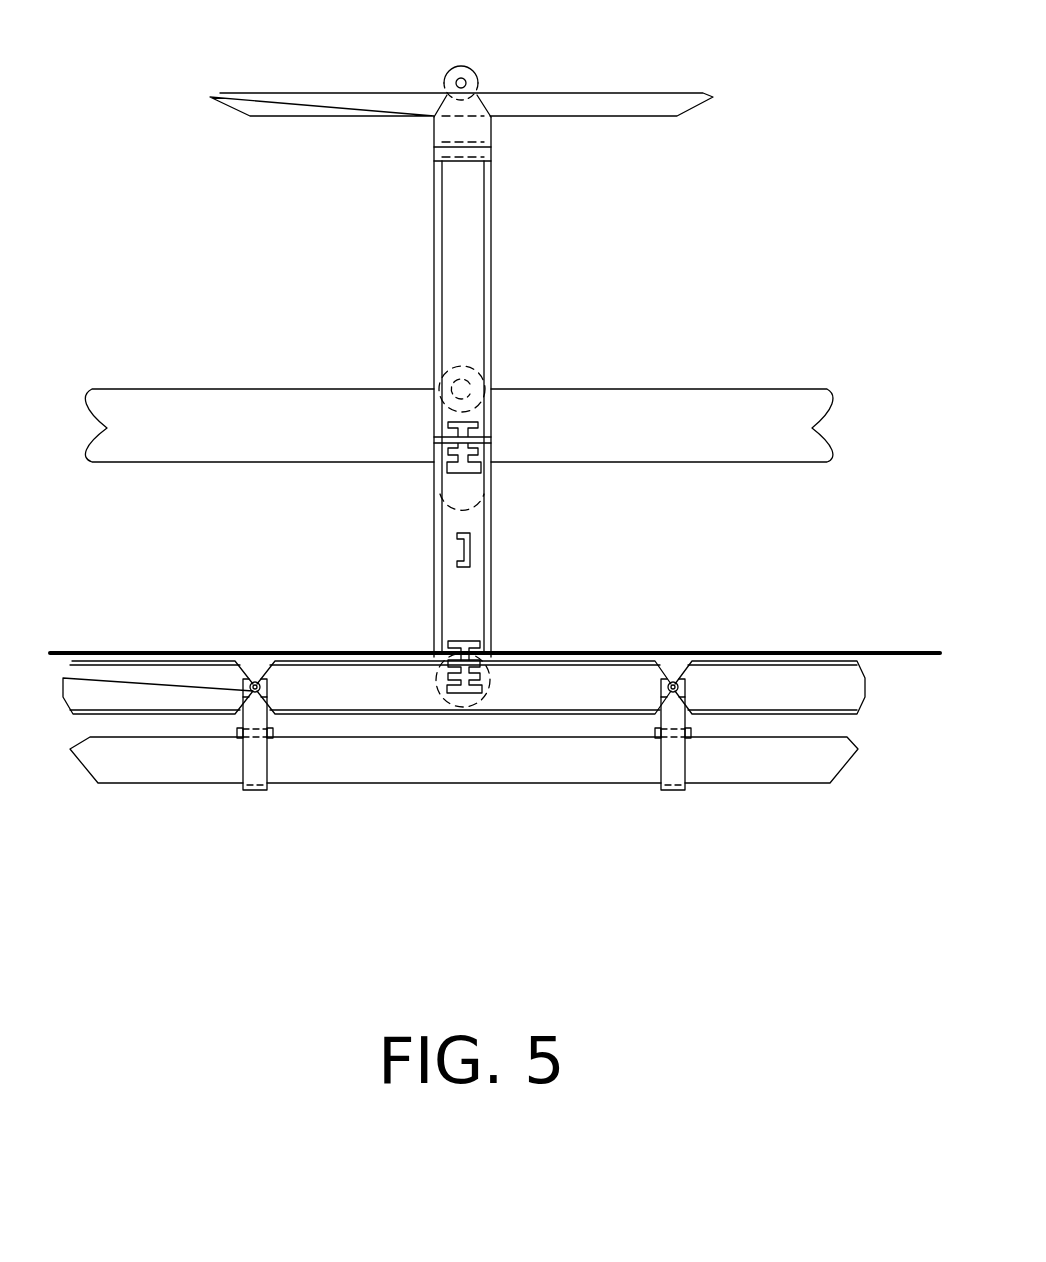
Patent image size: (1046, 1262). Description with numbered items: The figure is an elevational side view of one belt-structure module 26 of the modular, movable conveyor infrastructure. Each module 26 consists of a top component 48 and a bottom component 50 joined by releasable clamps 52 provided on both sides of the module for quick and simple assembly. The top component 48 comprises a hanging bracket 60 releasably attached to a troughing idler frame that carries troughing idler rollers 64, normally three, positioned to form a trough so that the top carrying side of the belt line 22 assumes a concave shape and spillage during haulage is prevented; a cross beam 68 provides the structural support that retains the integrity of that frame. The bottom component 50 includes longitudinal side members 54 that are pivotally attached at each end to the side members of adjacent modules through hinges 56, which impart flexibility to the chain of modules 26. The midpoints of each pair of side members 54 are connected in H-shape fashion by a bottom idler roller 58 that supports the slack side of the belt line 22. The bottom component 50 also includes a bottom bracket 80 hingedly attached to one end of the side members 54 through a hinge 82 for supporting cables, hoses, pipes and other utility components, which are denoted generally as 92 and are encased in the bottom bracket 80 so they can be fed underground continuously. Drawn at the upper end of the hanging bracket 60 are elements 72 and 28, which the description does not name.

The belt line 22 is at (665, 418).
The structure module 26 is at (287, 280).
The bar 28 is at (660, 107).
The top component 48 is at (559, 376).
The bottom component 50 is at (464, 671).
The releasable clamp 52 is at (475, 642).
The longitudinal side member 54 is at (153, 685).
The hinge 56 is at (256, 682).
The bottom idler roller 58 is at (440, 700).
The hanging bracket 60 is at (460, 228).
The troughing idler roller 64 is at (475, 380).
The cross beam 68 is at (465, 550).
The ring 72 is at (448, 80).
The bottom bracket 80 is at (250, 768).
The hinge 82 is at (273, 737).
The cables, hoses and pipes 92 is at (548, 772).